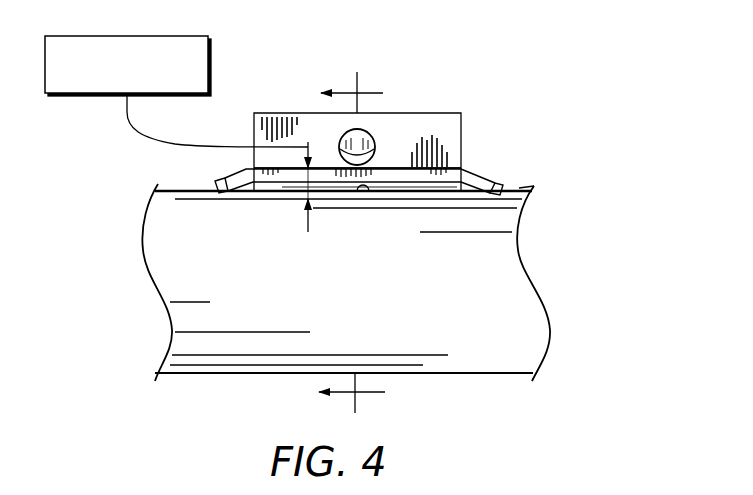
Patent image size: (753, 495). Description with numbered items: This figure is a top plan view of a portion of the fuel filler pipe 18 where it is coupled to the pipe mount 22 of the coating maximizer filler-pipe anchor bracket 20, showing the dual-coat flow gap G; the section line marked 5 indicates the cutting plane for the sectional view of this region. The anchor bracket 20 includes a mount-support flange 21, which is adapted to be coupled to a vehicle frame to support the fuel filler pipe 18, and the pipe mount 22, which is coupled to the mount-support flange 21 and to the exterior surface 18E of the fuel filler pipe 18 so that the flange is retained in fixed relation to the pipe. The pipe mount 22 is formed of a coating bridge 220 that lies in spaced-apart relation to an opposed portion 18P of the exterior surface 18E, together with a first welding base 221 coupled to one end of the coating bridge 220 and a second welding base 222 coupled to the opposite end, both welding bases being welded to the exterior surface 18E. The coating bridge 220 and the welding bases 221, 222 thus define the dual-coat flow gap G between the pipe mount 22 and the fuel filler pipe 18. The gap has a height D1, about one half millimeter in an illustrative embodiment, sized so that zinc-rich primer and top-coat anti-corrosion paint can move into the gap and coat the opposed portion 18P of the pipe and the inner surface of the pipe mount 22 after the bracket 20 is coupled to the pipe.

The fuel filler pipe 18 is at (499, 337).
The exterior surface 18E is at (519, 188).
The opposed portion 18P is at (358, 193).
The filler-pipe anchor bracket 20 is at (464, 131).
The mount-support flange 21 is at (436, 128).
The pipe mount 22 is at (482, 166).
The coating bridge 220 is at (332, 168).
The first welding base 221 is at (228, 178).
The second welding base 222 is at (492, 181).
The height D1 is at (305, 222).
The section line 5- 5 is at (362, 242).
The dual-coat flow gap G is at (110, 36).